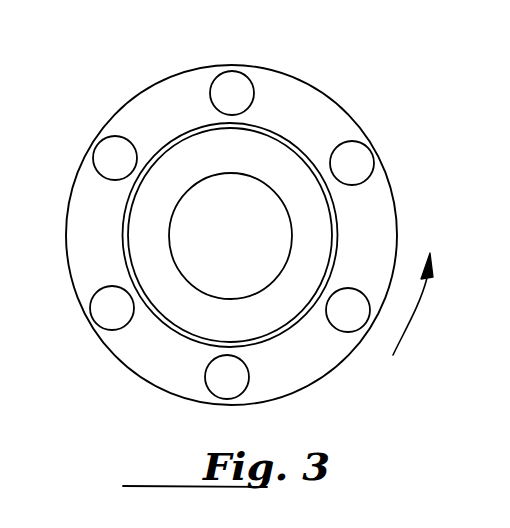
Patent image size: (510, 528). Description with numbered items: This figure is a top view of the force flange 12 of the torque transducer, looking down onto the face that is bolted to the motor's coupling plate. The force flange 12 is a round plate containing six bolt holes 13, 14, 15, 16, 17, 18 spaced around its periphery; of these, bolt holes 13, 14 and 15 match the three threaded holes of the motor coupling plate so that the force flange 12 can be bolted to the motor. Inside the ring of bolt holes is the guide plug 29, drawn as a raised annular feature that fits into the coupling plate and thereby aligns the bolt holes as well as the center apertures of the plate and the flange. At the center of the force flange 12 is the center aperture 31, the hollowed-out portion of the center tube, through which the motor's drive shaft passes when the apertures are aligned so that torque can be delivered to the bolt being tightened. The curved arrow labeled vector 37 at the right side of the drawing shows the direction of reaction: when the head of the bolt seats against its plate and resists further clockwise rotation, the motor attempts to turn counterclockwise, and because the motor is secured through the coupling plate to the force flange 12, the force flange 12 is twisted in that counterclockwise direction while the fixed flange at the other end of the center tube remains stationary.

The force flange 12 is at (392, 198).
The bolt hole 13 is at (102, 312).
The bolt hole 14 is at (220, 385).
The bolt hole 15 is at (355, 320).
The bolt hole 16 is at (358, 160).
The bolt hole 17 is at (233, 85).
The bolt hole 18 is at (108, 153).
The guide plug 29 is at (282, 152).
The center aperture 31 is at (220, 236).
The vector 37 is at (418, 308).